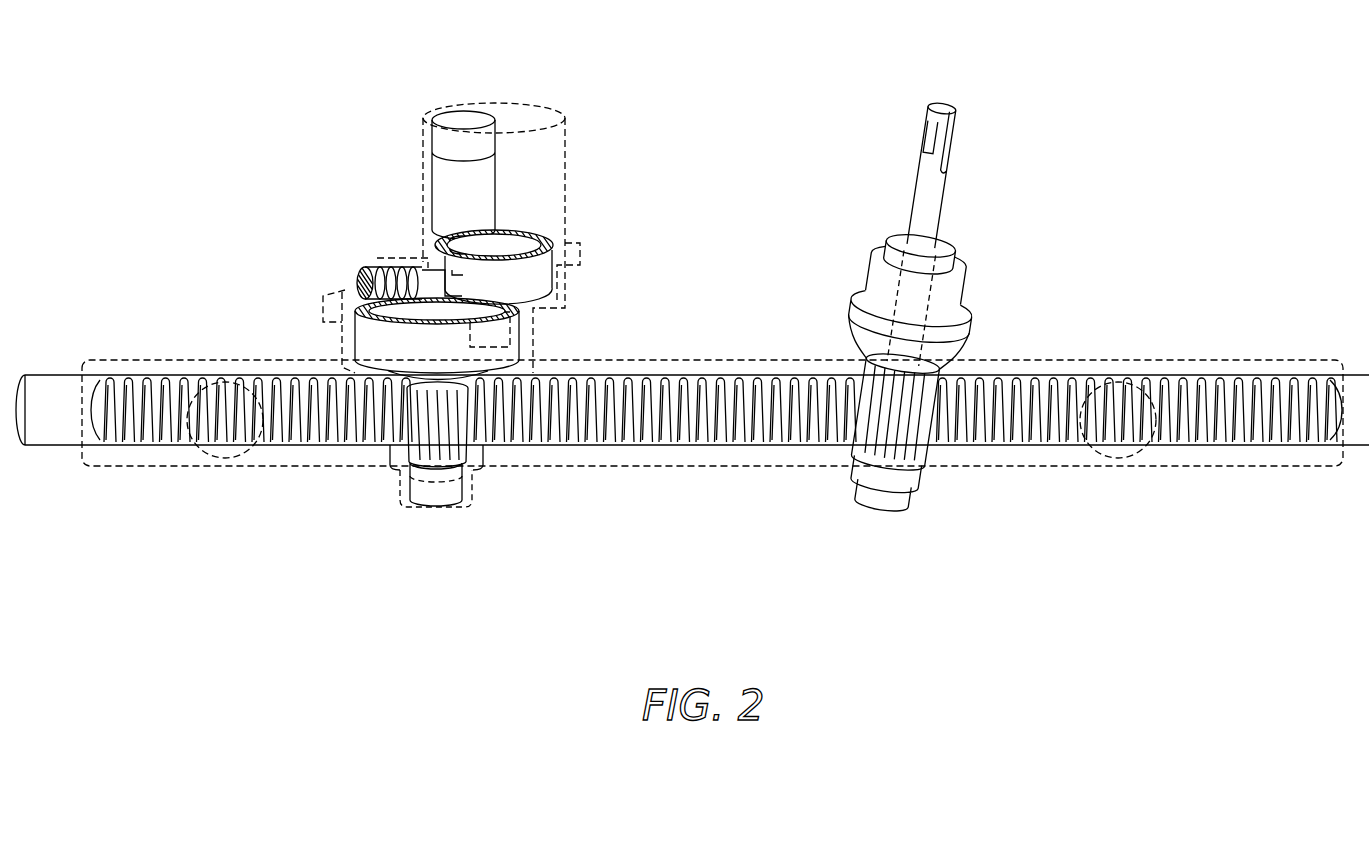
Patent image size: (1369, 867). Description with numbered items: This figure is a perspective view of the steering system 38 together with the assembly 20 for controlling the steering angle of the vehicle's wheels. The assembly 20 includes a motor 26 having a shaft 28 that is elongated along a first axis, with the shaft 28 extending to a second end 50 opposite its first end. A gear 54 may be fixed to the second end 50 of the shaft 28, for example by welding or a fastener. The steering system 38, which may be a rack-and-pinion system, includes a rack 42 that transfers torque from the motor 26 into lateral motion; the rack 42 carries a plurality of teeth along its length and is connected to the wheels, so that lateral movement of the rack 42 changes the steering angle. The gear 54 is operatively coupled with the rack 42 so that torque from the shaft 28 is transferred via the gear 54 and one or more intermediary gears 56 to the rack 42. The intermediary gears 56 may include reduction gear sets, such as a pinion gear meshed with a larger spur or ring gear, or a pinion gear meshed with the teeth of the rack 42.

The assembly 20 is at (507, 102).
The motor 26 is at (447, 175).
The shaft 28 is at (457, 243).
The second end 50 is at (505, 232).
The gear 54 is at (553, 238).
The intermediary gears 56 is at (545, 331).
The steering system 38 is at (1048, 230).
The rack 42 is at (602, 430).